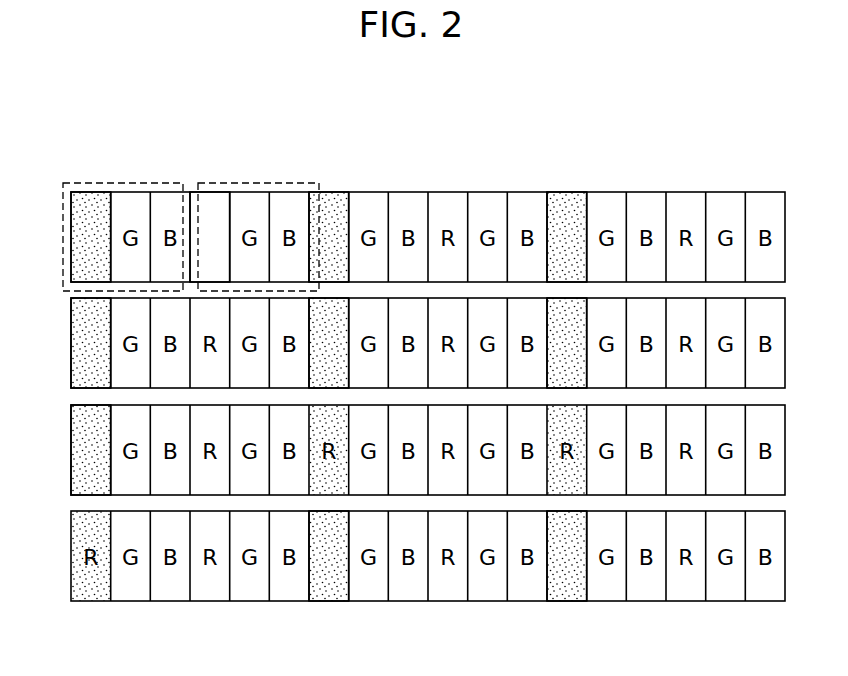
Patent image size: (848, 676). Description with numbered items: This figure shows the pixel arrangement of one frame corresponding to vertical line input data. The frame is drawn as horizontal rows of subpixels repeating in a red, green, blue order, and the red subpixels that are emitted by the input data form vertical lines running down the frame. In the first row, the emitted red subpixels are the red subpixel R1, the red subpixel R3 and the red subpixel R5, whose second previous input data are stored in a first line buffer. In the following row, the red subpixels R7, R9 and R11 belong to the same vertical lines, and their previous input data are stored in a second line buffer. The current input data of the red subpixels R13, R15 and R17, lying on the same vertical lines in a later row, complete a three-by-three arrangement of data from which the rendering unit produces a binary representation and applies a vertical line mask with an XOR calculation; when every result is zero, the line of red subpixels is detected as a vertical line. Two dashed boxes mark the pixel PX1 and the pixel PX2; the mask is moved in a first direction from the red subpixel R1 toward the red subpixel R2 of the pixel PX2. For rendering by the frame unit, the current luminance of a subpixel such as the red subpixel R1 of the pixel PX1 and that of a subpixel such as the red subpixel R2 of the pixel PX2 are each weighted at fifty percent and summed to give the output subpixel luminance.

The pixel PX1 is at (140, 183).
The pixel PX2 is at (259, 183).
The red subpixel R1 is at (86, 196).
The red subpixel R2 is at (203, 196).
The red subpixel R3 is at (331, 196).
The red subpixel R5 is at (560, 196).
The red subpixel R7 is at (82, 374).
The red subpixel R9 is at (335, 307).
The red subpixel R11 is at (573, 307).
The red subpixel R13 is at (82, 478).
The red subpixel R15 is at (318, 485).
The red subpixel R17 is at (557, 485).